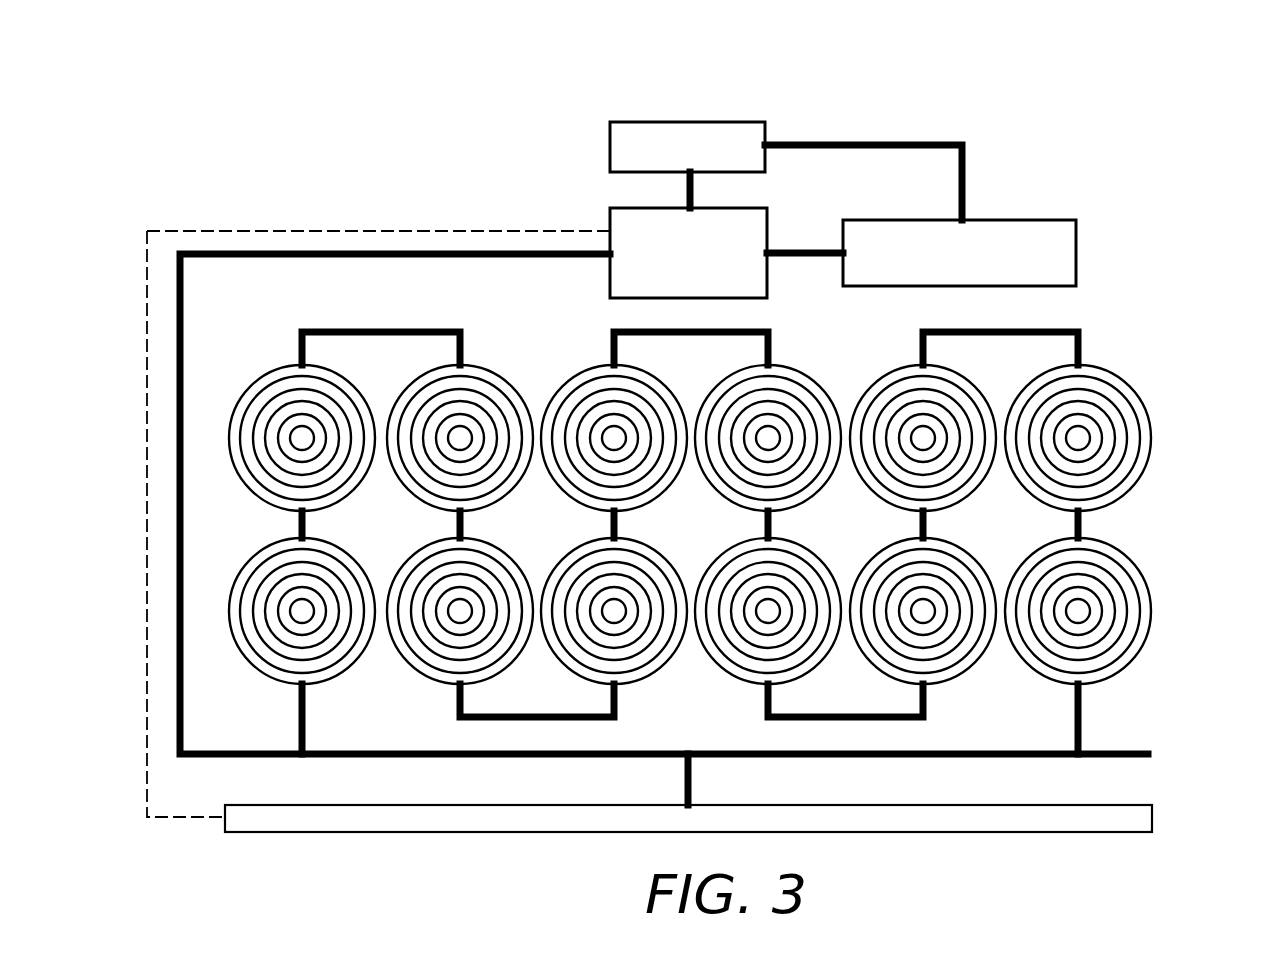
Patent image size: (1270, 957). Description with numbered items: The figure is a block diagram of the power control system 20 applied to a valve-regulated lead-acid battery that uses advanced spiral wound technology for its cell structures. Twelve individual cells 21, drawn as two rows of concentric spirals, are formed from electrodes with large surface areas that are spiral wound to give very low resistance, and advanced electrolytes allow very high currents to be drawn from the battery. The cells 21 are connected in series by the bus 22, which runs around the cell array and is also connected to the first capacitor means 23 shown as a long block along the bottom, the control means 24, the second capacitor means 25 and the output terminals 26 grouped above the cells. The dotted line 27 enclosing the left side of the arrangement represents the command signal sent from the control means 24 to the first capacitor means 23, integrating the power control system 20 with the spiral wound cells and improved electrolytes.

The power control system 20 is at (1178, 172).
The cells 21 is at (407, 380).
The bus 22 is at (577, 256).
The first capacitor means 23 is at (1152, 820).
The control means 24 is at (610, 218).
The second capacitor means 25 is at (1076, 253).
The output terminals 26 is at (743, 122).
The dotted line 27 is at (200, 230).